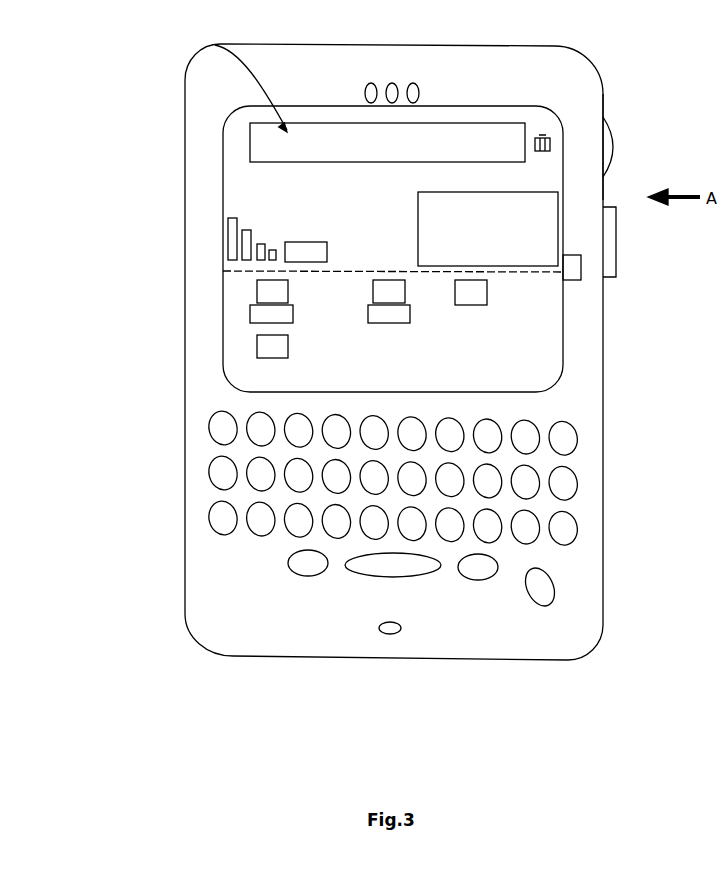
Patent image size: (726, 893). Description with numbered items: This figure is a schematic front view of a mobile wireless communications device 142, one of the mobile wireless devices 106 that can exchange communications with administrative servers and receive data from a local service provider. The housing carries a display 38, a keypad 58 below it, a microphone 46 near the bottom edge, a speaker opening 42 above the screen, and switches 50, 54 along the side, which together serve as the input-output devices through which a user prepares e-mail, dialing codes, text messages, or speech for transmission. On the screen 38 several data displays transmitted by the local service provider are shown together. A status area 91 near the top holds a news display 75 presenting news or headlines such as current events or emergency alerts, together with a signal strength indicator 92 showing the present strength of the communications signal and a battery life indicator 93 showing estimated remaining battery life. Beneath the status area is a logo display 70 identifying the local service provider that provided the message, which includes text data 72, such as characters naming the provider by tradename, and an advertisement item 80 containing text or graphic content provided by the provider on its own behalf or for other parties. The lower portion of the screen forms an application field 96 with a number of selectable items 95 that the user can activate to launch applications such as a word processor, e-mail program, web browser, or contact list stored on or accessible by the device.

The mobile wireless device 106 is at (358, 427).
The mobile wireless communications device 142 is at (133, 700).
The switch 50 is at (617, 107).
The battery life indicator 93 is at (616, 115).
The switch 54 is at (413, 297).
The display 38 is at (425, 288).
The application field 96 is at (540, 388).
The speaker 42 is at (360, 82).
The news display 75 is at (263, 113).
The status area 91 is at (215, 44).
The signal strength indicator 92 is at (222, 232).
The logo display 70 is at (303, 238).
The text data 72 is at (330, 262).
The advertisement item 80 is at (495, 191).
The selectable items 95 is at (293, 350).
The keypad 58 is at (220, 521).
The microphone 46 is at (388, 637).